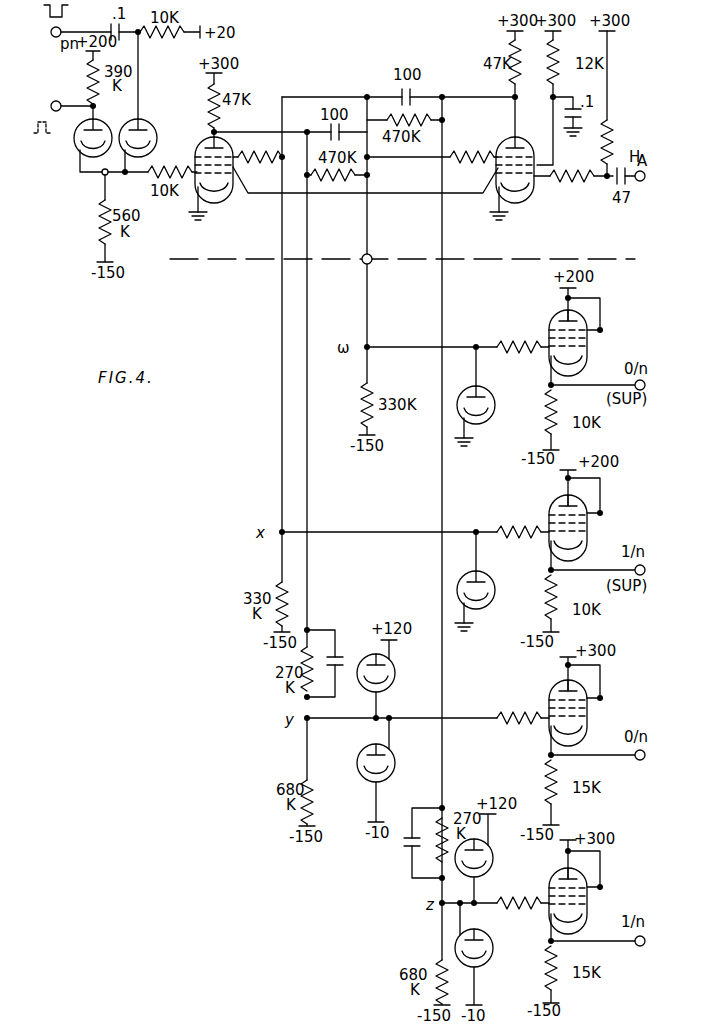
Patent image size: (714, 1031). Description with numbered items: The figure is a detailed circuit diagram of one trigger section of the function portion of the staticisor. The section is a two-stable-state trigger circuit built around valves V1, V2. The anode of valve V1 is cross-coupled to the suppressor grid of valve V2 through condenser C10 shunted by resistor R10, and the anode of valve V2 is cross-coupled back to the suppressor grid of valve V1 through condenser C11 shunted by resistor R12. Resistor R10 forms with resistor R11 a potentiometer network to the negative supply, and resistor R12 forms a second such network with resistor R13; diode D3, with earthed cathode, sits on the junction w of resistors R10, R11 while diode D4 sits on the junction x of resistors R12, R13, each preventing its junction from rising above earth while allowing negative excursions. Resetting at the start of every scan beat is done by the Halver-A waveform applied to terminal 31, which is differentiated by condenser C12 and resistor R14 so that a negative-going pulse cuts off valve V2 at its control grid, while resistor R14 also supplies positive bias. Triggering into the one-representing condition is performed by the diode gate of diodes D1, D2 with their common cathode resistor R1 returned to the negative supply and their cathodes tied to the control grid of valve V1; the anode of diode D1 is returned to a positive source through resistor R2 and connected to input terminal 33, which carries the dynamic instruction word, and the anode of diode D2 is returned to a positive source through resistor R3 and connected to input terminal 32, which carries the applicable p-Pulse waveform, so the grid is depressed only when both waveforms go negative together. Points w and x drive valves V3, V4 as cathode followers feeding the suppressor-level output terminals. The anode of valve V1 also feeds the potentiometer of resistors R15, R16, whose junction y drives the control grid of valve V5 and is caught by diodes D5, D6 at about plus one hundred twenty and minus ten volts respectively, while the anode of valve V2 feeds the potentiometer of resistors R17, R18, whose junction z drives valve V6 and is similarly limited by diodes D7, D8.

The terminal 31 is at (638, 186).
The input terminal 32 is at (53, 38).
The input terminal 33 is at (53, 95).
The common cathode resistor R1 is at (94, 209).
The resistor R2 is at (84, 82).
The resistor R3 is at (162, 39).
The resistor R10 is at (348, 178).
The resistor R11 is at (359, 407).
The resistor R12 is at (425, 121).
The resistor R13 is at (279, 591).
The resistor R14 is at (624, 103).
The resistor R15 is at (312, 650).
The resistor R16 is at (324, 771).
The resistor R17 is at (437, 826).
The resistor R18 is at (439, 976).
The condenser C10 is at (312, 123).
The condenser C11 is at (416, 93).
The condenser C12 is at (615, 184).
The diode D1 is at (99, 129).
The diode D2 is at (145, 129).
The diode D3 is at (474, 396).
The diode D4 is at (473, 581).
The diode D5 is at (387, 672).
The diode D6 is at (369, 759).
The diode D7 is at (486, 857).
The diode D8 is at (486, 947).
The valve V1 is at (206, 164).
The valve V2 is at (511, 159).
The valve V3 is at (558, 341).
The valve V4 is at (557, 526).
The valve V5 is at (557, 711).
The valve V6 is at (557, 899).